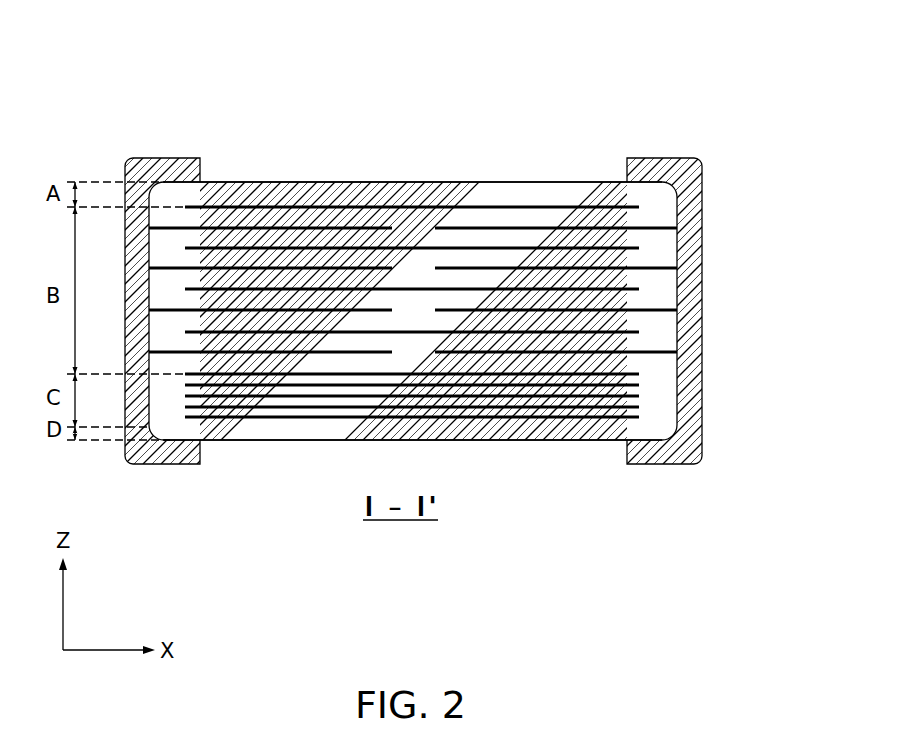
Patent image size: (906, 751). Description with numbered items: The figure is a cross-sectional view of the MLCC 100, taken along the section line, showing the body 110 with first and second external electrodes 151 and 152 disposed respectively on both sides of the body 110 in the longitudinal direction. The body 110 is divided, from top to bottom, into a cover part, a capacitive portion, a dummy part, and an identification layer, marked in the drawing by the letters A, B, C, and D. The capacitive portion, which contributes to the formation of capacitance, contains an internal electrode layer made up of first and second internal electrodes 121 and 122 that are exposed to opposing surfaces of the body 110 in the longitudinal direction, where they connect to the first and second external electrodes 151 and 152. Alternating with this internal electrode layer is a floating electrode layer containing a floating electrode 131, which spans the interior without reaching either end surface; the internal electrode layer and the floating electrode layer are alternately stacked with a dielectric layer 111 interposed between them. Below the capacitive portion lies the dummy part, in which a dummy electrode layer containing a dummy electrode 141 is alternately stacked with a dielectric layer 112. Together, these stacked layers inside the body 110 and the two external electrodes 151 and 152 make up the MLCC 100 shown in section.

The MLCC 100 is at (293, 45).
The body 110 is at (495, 182).
The dielectric layer 111 is at (640, 217).
The dielectric layer 112 is at (640, 390).
The first internal electrode 121 is at (368, 228).
The second internal electrode 122 is at (660, 228).
The floating electrode 131 is at (639, 207).
The dummy electrode 141 is at (640, 373).
The first external electrode 151 is at (170, 464).
The second external electrode 152 is at (665, 453).